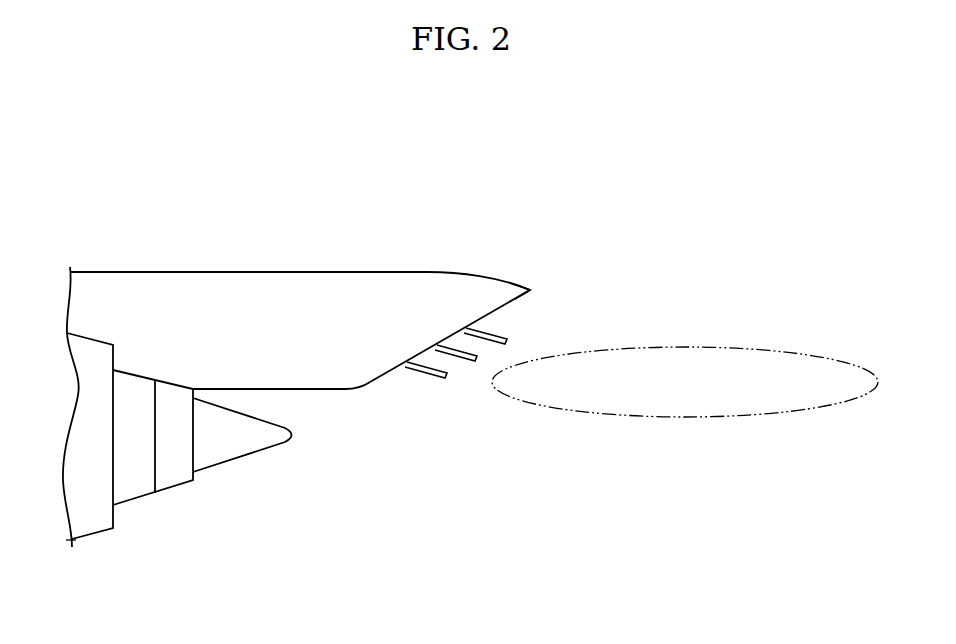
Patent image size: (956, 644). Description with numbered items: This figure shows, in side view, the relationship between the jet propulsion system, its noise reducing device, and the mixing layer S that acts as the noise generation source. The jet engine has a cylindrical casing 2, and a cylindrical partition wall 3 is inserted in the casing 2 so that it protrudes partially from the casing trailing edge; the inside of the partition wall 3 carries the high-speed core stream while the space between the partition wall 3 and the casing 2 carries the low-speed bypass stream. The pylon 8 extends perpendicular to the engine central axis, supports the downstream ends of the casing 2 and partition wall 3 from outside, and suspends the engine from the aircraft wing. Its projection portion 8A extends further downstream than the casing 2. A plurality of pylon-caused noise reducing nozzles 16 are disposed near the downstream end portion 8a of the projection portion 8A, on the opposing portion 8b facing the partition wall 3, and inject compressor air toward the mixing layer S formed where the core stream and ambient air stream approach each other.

The casing 2 is at (93, 523).
The cylindrical partition wall 3 is at (170, 482).
The pylon 8 is at (328, 347).
The projection portion 8A is at (423, 292).
The downstream end portion 8a is at (513, 302).
The opposing portion 8b is at (330, 390).
The pylon-caused noise reducing nozzles 16 is at (490, 347).
The mixing layer S is at (722, 357).